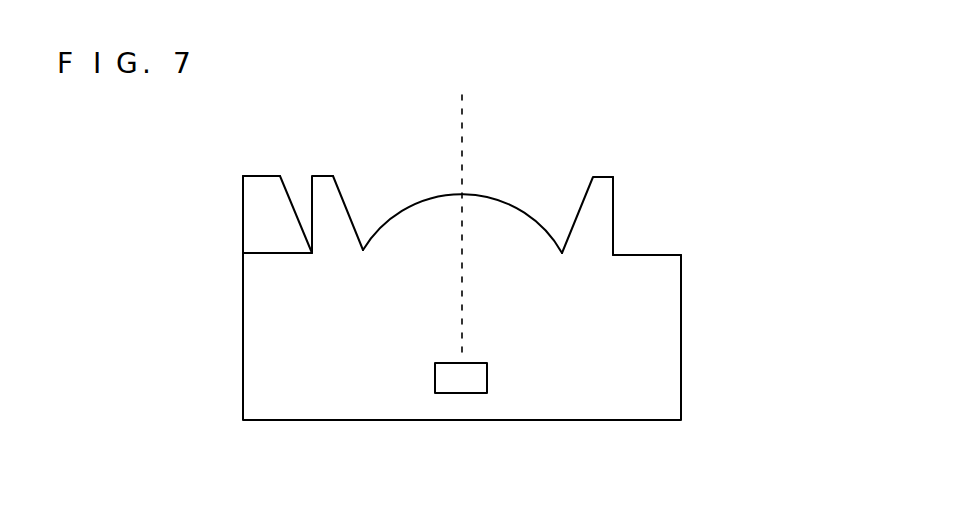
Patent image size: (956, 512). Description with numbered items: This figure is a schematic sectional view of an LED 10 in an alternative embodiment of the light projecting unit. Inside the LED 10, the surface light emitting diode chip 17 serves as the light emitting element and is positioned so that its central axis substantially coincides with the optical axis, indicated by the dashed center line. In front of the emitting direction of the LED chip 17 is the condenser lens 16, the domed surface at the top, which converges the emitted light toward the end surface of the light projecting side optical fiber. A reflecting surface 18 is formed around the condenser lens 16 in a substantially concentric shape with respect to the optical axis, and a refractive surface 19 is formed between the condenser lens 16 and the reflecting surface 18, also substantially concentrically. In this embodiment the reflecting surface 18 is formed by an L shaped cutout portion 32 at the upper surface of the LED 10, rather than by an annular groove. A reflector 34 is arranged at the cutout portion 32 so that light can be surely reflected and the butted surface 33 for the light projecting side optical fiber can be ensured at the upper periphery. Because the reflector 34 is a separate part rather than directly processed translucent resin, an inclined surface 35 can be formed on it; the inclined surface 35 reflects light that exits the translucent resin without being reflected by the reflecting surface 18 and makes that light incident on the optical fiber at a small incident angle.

The LED 10 is at (681, 357).
The condenser lens 16 is at (498, 198).
The surface light emitting diode chip 17 is at (470, 393).
The reflecting surface 18 is at (613, 233).
The refractive surface 19 is at (578, 203).
The L shaped cutout portion 32 is at (640, 212).
The butted surface 33 is at (263, 177).
The reflector 34 is at (265, 228).
The inclined surface 35 is at (292, 203).